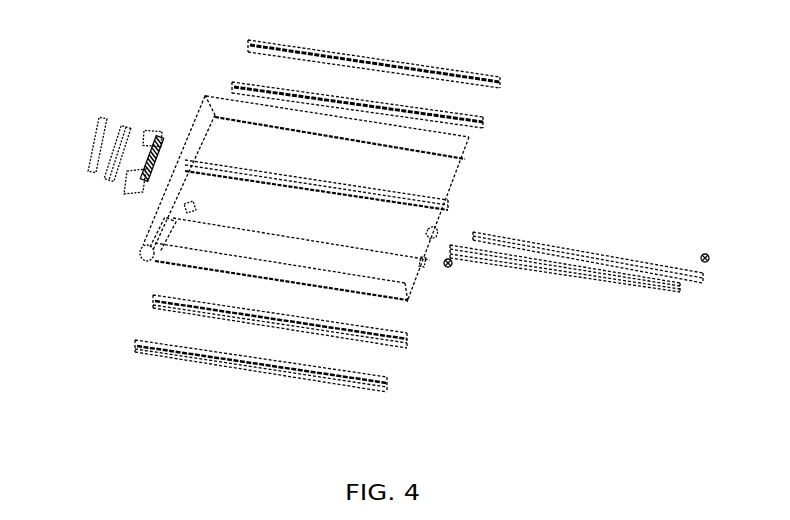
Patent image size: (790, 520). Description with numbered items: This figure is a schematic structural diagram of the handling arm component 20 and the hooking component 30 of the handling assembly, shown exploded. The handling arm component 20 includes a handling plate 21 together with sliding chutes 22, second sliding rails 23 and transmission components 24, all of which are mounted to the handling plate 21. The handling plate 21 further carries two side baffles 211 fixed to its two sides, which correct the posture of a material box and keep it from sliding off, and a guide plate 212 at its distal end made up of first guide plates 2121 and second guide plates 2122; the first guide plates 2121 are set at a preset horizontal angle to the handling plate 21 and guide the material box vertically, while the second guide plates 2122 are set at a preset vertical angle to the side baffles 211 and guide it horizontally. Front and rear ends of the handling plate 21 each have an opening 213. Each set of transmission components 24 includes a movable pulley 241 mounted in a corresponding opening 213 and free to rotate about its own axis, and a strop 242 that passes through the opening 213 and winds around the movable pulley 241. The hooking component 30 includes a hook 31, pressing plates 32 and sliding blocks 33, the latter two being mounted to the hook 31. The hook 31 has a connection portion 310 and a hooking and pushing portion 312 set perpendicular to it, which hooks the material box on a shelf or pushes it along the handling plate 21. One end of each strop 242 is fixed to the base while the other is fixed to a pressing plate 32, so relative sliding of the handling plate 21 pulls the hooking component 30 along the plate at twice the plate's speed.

The handling arm component 20 is at (570, 128).
The handling plate 21 is at (420, 157).
The side baffle 211 is at (342, 125).
The guide plate 212 is at (79, 208).
The first guide plate 2121 is at (212, 123).
The second guide plate 2122 is at (163, 249).
The opening 213 is at (437, 234).
The sliding chute 22 is at (362, 330).
The second sliding rail 23 is at (425, 64).
The transmission component 24 is at (675, 347).
The movable pulley 241 is at (703, 260).
The strop 242 is at (677, 287).
The hooking component 30 is at (140, 78).
The hook 31 is at (57, 117).
The connection portion 310 is at (112, 175).
The hooking and pushing portion 312 is at (117, 116).
The pressing plate 32 is at (137, 182).
The sliding block 33 is at (145, 183).